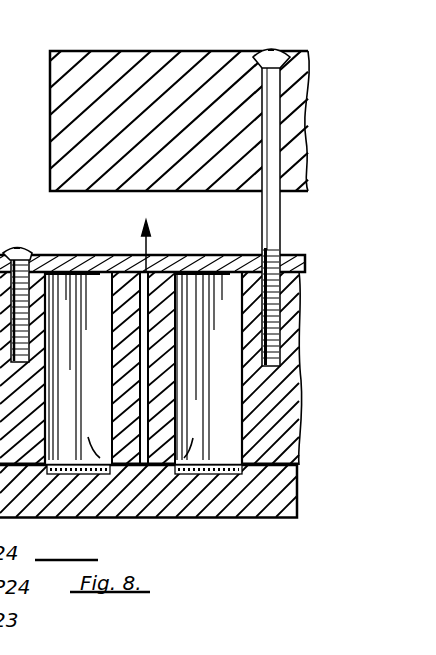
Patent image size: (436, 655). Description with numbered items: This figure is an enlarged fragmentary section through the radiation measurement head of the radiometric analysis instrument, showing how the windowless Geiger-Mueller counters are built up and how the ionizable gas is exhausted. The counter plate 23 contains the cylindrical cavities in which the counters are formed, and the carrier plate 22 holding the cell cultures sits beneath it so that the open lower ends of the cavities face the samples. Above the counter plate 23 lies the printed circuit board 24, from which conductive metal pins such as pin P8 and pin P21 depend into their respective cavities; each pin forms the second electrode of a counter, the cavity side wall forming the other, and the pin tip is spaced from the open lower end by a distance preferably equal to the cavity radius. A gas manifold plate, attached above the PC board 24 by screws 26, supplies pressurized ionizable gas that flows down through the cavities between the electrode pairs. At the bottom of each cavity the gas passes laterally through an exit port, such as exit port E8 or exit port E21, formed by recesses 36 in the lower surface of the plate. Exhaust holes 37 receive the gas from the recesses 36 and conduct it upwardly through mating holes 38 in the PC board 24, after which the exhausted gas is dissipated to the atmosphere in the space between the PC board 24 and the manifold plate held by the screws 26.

The carrier plate 22 is at (253, 506).
The counter plate 23 is at (161, 0).
The printed circuit board 24 is at (50, 253).
The screws 26 is at (262, 48).
The recesses 36 is at (123, 472).
The exhaust holes 37 is at (153, 283).
The mating holes 38 is at (143, 250).
The conductive metal pin P8 is at (97, 300).
The conductive metal pin P21 is at (218, 290).
The exit port E8 is at (127, 472).
The exit port E21 is at (135, 472).